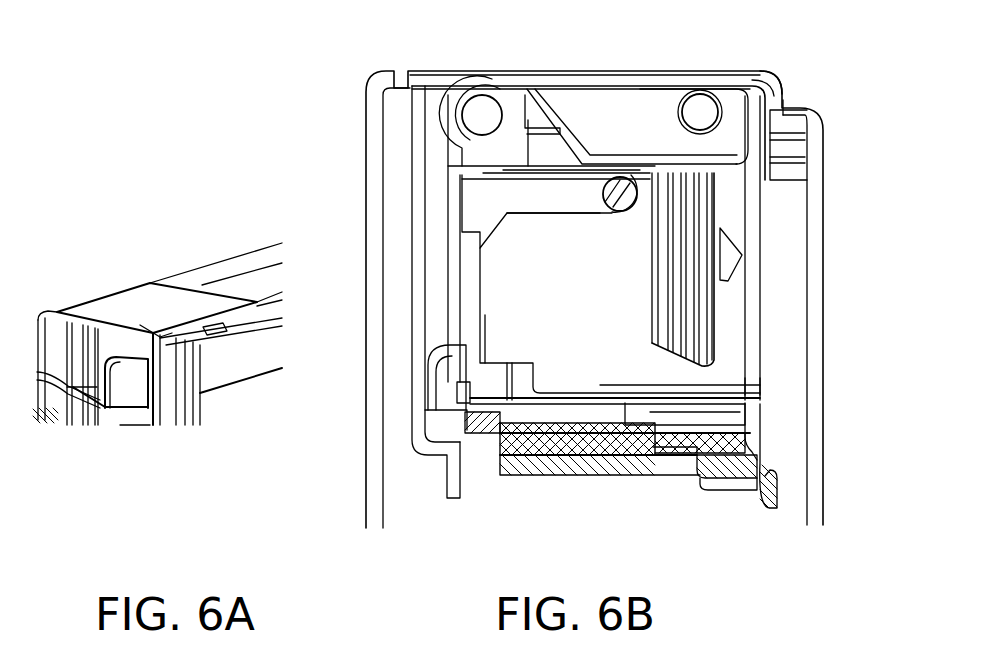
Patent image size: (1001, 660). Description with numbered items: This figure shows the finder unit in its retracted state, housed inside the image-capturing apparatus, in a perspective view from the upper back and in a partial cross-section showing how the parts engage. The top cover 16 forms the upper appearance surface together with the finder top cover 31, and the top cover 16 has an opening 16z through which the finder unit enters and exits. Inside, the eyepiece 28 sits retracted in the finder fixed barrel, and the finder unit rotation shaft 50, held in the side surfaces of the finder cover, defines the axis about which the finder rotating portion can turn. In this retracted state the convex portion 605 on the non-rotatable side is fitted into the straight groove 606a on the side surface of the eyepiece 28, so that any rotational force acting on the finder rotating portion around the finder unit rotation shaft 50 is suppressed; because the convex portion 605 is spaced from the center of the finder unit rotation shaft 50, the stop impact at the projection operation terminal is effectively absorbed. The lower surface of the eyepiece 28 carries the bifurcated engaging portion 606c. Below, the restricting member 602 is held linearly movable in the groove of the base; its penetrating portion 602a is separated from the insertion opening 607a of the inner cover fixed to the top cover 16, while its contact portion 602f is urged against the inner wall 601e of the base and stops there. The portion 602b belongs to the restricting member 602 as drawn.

In FIG. 6A, the top cover 16 is at (192, 283).
In FIG. 6B, the top cover 16 is at (807, 112).
In FIG. 6B, the opening 16z is at (762, 76).
In FIG. 6B, the finder top cover 31 is at (640, 72).
In FIG. 6B, the finder unit rotation shaft 50 is at (482, 108).
In FIG. 6B, the convex portion 605 is at (622, 183).
In FIG. 6B, the insertion opening 607a is at (778, 155).
In FIG. 6B, the eyepiece 28 is at (620, 290).
In FIG. 6B, the straight groove 606a is at (547, 193).
In FIG. 6B, the engaging portion 606c is at (606, 424).
In FIG. 6B, the inner wall 601e is at (503, 446).
In FIG. 6B, the restricting member 602 is at (573, 445).
In FIG. 6B, the contact portion 602f is at (515, 440).
In FIG. 6B, the elastic member second portion 602b is at (603, 457).
In FIG. 6B, the penetrating portion 602a is at (650, 447).